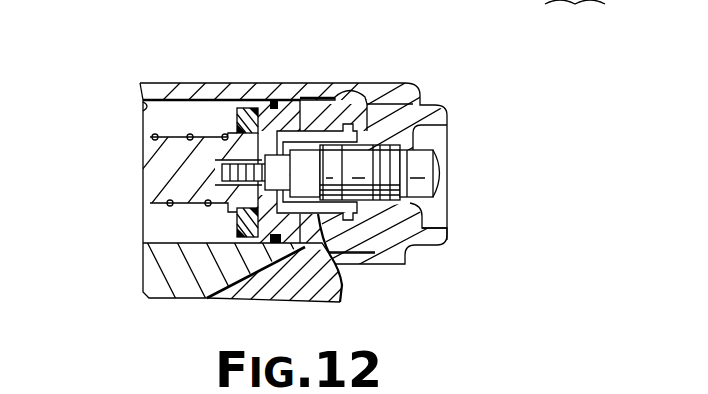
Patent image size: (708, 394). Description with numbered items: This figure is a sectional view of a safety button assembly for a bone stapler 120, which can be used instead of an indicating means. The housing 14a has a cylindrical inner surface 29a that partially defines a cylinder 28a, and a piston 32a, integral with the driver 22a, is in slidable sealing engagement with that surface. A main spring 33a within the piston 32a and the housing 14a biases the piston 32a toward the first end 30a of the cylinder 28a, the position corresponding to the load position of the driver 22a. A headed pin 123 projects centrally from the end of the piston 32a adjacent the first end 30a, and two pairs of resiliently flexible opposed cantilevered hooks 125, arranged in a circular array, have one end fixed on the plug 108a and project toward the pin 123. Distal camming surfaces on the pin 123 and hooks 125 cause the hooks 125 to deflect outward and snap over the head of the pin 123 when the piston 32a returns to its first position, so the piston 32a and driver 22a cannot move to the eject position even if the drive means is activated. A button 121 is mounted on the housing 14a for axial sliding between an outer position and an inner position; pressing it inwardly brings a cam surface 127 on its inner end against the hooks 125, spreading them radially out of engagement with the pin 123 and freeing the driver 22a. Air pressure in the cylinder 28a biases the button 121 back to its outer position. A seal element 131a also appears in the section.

The housing 14a is at (148, 82).
The cylinder 28a is at (189, 92).
The cylindrical inner surface 29a is at (143, 105).
The main spring 33a is at (142, 130).
The driver 22a is at (160, 167).
The seal ring 131a is at (249, 108).
The piston 32a is at (280, 113).
The cantilevered hooks 125 is at (309, 160).
The first end of the cylinder 30a is at (322, 158).
The bone stapler 120 is at (385, 76).
The button 121 is at (428, 174).
The plug 108a is at (447, 243).
The cam surface 127 is at (343, 272).
The headed pin 123 is at (222, 297).